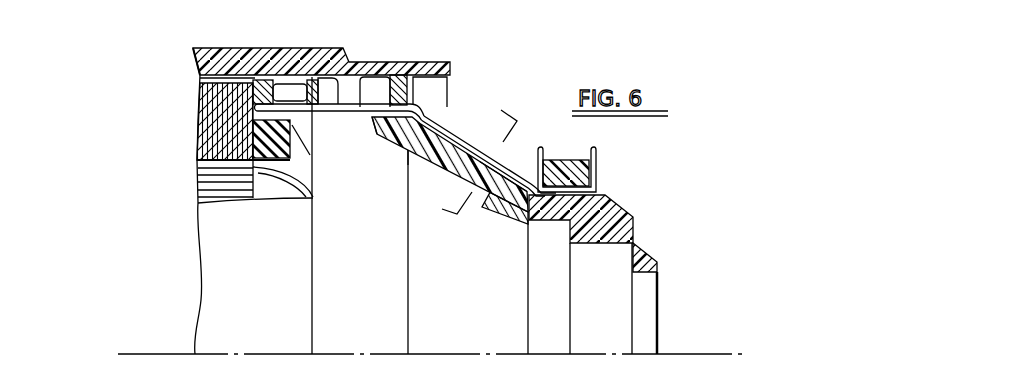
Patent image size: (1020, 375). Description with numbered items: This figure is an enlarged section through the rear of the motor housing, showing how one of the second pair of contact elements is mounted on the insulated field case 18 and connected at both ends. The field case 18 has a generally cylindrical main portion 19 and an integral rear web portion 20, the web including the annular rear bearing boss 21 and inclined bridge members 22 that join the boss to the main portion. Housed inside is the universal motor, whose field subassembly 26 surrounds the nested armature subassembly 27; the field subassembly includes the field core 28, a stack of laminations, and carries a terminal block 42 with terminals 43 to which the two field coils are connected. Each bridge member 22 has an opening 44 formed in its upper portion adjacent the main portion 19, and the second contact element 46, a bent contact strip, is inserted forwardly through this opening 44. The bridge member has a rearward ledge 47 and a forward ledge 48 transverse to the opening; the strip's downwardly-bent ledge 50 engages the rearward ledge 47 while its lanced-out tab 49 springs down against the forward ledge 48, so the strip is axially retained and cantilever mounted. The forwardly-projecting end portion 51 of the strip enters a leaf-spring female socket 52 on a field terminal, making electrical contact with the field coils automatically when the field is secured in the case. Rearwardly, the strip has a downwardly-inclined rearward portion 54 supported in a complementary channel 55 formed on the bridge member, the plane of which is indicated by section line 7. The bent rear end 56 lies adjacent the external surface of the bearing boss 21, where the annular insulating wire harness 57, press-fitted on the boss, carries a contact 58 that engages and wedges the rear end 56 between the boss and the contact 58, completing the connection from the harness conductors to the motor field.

The section line 7- 7 is at (470, 153).
The field case 18 is at (203, 42).
The main portion 19 is at (197, 62).
The rear web portion 20 is at (507, 223).
The rear bearing boss 21 is at (652, 254).
The bridge member 22 is at (440, 162).
The field subassembly 26 is at (190, 128).
The armature subassembly 27 is at (237, 192).
The field core 28 is at (200, 147).
The terminal block 42 is at (300, 157).
The terminal 43 is at (304, 85).
The opening 44 is at (398, 90).
The second contact element 46 is at (515, 178).
The rearward ledge 47 is at (407, 158).
The forward ledge 48 is at (372, 120).
The lanced-out tab 49 is at (372, 105).
The downwardly-bent ledge 50 is at (445, 100).
The forwardly-projecting end portion 51 is at (302, 113).
The leaf-spring female socket 52 is at (273, 98).
The downwardly-inclined rearward portion 54 is at (500, 179).
The channel 55 is at (526, 184).
The rear end 56 is at (529, 228).
The wire harness 57 is at (578, 173).
The contact 58 is at (575, 188).